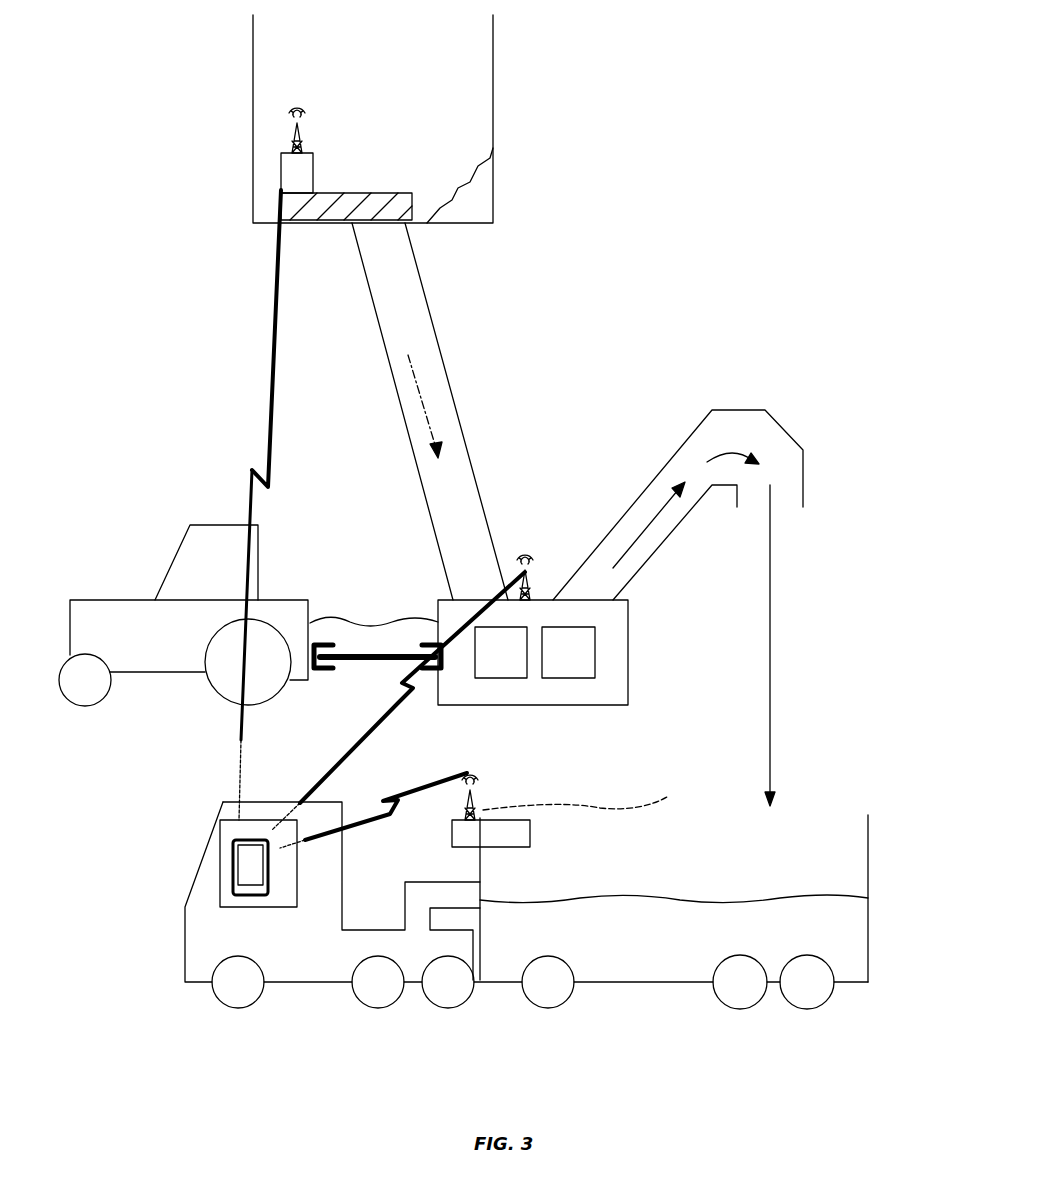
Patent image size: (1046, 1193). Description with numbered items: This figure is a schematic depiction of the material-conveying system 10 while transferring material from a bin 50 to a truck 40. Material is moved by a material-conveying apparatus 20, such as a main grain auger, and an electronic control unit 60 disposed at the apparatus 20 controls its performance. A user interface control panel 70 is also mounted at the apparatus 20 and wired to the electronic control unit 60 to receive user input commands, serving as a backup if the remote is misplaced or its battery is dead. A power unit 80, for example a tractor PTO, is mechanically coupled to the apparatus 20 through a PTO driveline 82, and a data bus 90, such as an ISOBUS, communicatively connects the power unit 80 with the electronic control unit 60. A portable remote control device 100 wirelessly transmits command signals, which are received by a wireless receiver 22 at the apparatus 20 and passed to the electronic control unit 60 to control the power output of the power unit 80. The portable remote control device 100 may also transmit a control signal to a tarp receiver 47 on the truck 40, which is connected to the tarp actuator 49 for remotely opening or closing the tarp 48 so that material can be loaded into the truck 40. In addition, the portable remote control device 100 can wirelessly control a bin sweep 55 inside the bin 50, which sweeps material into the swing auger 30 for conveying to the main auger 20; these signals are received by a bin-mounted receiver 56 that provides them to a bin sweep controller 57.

The material-conveying system 10 is at (820, 286).
The material-conveying apparatus 20 is at (655, 477).
The wireless receiver 22 is at (530, 568).
The swing auger 30 is at (440, 347).
The truck 40 is at (868, 838).
The tarp receiver 47 is at (477, 795).
The tarp 48 is at (603, 808).
The tarp actuator 49 is at (491, 833).
The bin 50 is at (495, 62).
The bin sweep 55 is at (325, 200).
The bin-mounted receiver 56 is at (282, 118).
The bin sweep controller 57 is at (281, 173).
The electronic control unit 60 is at (501, 652).
The user interface control panel 70 is at (568, 652).
The power unit 80 is at (115, 600).
The PTO driveline 82 is at (360, 668).
The data bus 90 is at (392, 620).
The portable remote control device 100 is at (230, 868).